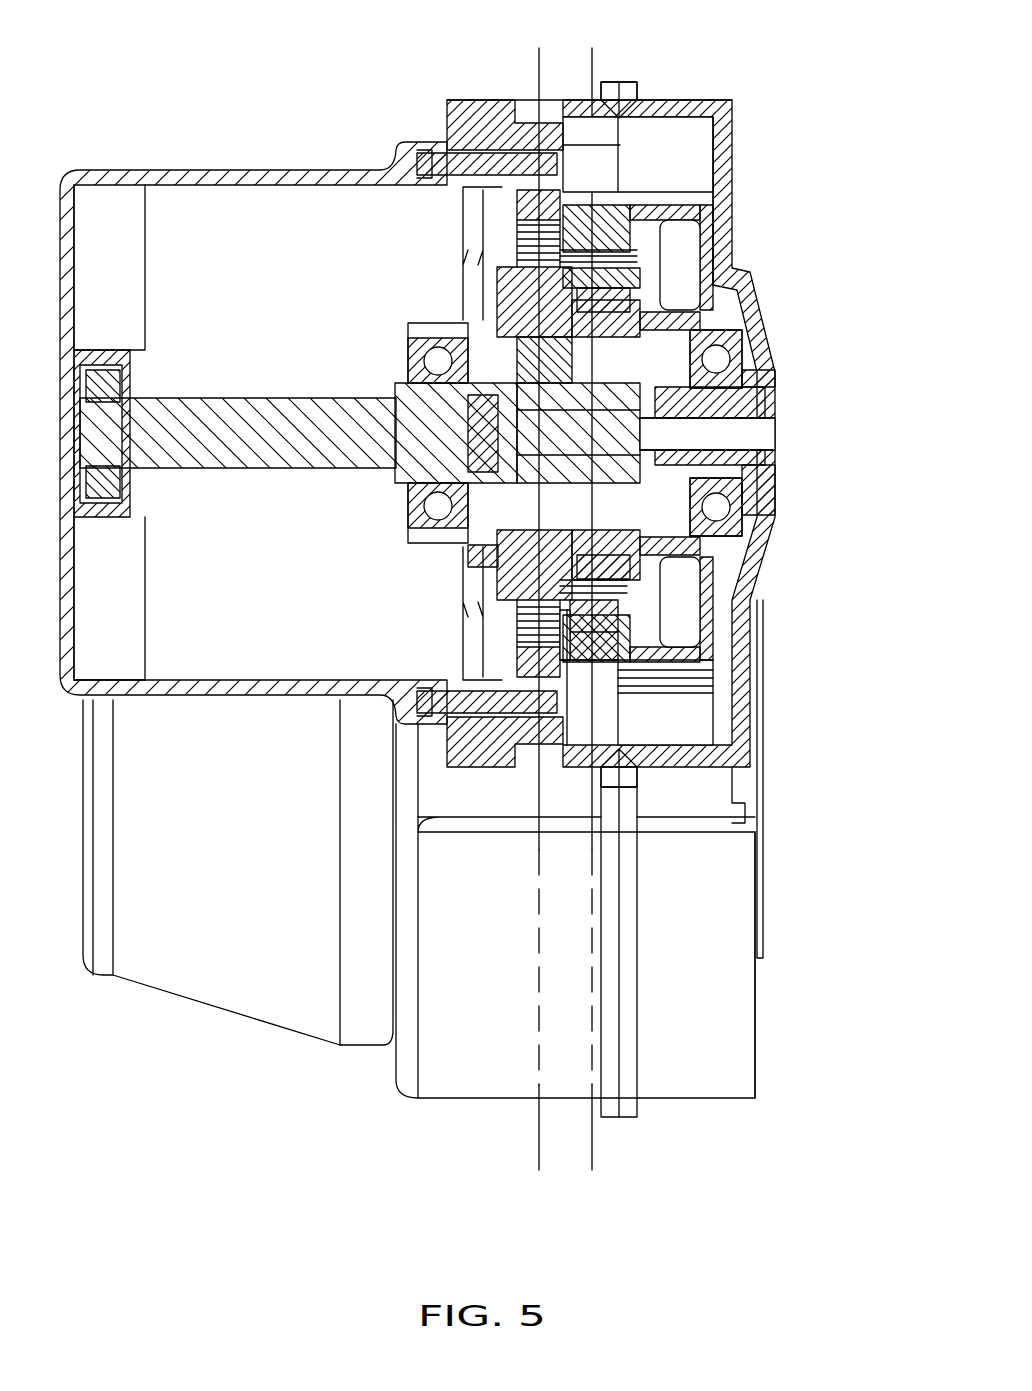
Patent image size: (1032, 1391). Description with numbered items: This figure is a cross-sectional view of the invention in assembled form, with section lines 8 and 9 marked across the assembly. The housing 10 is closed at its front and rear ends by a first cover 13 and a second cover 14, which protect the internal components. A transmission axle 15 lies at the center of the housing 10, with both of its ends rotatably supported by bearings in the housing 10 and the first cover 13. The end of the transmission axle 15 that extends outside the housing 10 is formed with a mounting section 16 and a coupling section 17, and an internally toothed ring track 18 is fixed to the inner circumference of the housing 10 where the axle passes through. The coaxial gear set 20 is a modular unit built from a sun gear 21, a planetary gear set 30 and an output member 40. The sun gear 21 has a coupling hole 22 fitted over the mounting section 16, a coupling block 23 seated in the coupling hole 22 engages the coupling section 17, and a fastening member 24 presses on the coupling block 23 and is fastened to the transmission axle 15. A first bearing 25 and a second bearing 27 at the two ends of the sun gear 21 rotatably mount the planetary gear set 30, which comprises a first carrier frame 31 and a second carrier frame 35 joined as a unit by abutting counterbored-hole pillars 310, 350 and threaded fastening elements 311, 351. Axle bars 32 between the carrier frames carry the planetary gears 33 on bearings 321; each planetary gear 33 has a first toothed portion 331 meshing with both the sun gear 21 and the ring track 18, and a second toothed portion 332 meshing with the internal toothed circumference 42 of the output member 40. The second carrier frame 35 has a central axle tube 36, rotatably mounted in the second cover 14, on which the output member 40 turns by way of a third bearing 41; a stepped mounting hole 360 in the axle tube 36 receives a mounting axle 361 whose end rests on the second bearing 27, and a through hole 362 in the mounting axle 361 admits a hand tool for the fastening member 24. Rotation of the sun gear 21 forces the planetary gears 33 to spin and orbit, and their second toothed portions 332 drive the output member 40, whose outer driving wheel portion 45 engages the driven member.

The section line 8- 8 is at (563, 60).
The section line 9- 9 is at (616, 60).
The housing 10 is at (483, 105).
The first cover 13 is at (185, 180).
The second cover 14 is at (723, 147).
The transmission axle 15 is at (233, 398).
The mounting section 16 is at (530, 400).
The coupling section 17 is at (487, 340).
The internally toothed ring track 18 is at (465, 130).
The coaxial gear set 20 is at (700, 150).
The sun gear 21 is at (690, 330).
The coupling hole 22 is at (700, 355).
The coupling block 23 is at (480, 588).
The fastening member 24 is at (740, 530).
The first bearing 25 is at (420, 500).
The second bearing 27 is at (750, 375).
The planetary gear set 30 is at (500, 640).
The first carrier frame 31 is at (440, 525).
The axle bar 32 is at (700, 600).
The planetary gear 33 is at (500, 605).
The second carrier frame 35 is at (700, 580).
The axle tube 36 is at (725, 500).
The output member 40 is at (640, 162).
The third bearing 41 is at (716, 370).
The internal toothed circumference 42 is at (652, 258).
The driving wheel portion 45 is at (668, 222).
The counterbored-hole pillar 310 is at (507, 300).
The threaded fastening element 311 is at (530, 270).
The bearing 321 is at (660, 620).
The first toothed portion 331 is at (593, 717).
The second toothed portion 332 is at (630, 645).
The counterbored-hole pillar 350 is at (640, 285).
The threaded fastening element 351 is at (652, 312).
The stepped mounting hole 360 is at (740, 462).
The mounting axle 361 is at (745, 410).
The through hole 362 is at (765, 440).